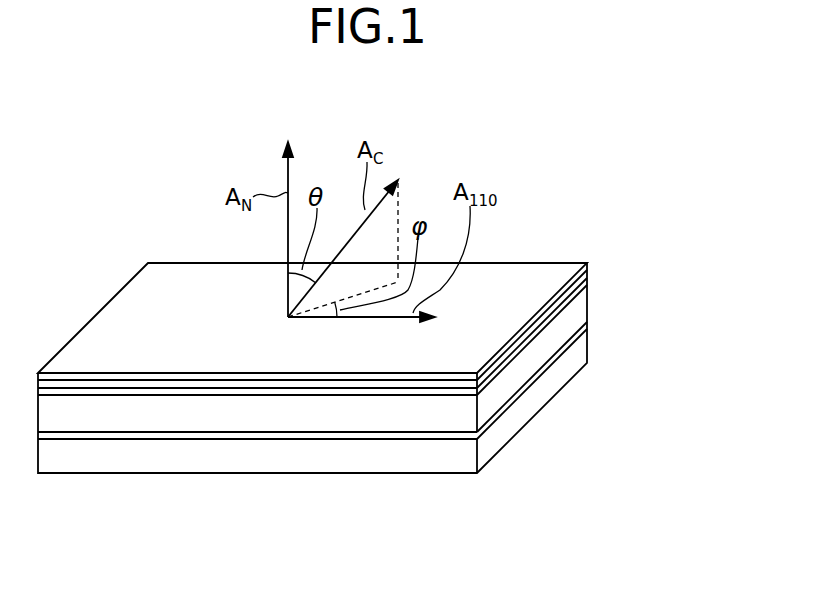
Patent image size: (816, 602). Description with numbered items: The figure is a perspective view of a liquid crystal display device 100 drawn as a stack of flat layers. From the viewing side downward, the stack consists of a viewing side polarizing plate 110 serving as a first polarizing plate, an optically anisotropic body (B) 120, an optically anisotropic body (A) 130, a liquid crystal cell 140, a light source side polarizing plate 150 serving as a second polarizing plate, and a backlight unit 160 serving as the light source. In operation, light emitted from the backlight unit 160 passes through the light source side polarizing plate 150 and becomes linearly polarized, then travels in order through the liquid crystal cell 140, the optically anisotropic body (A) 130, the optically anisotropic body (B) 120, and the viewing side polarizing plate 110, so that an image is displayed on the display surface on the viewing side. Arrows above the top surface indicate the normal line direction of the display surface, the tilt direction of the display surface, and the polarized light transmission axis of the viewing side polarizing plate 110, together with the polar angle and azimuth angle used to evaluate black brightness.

The liquid crystal display device 100 is at (568, 138).
The viewing side polarizing plate 110 is at (588, 268).
The optically anisotropic body (B) 120 is at (588, 274).
The optically anisotropic body (A) 130 is at (588, 281).
The liquid crystal cell 140 is at (588, 307).
The light source side polarizing plate 150 is at (588, 325).
The backlight unit 160 is at (588, 350).